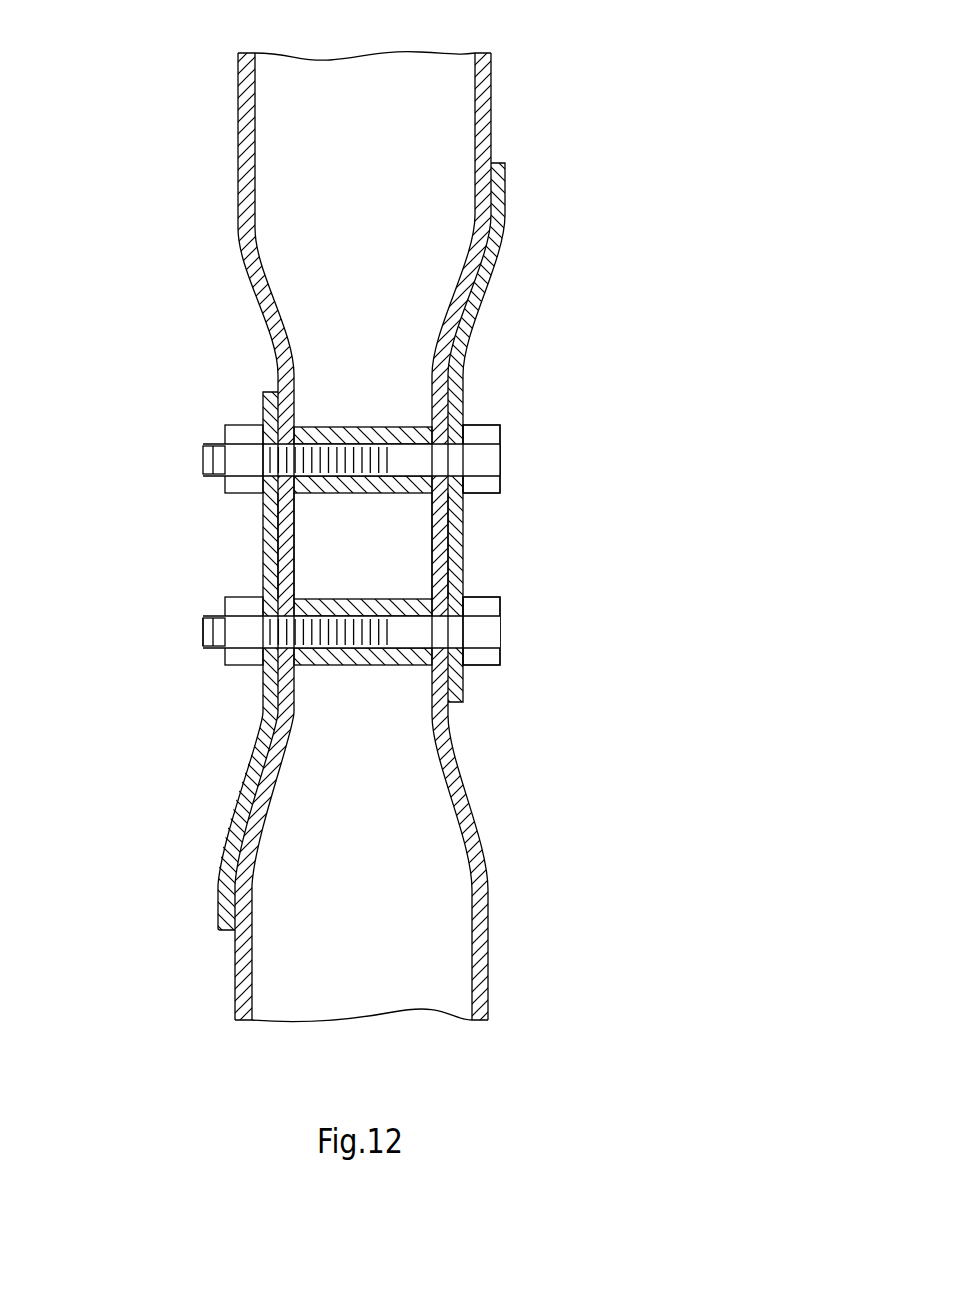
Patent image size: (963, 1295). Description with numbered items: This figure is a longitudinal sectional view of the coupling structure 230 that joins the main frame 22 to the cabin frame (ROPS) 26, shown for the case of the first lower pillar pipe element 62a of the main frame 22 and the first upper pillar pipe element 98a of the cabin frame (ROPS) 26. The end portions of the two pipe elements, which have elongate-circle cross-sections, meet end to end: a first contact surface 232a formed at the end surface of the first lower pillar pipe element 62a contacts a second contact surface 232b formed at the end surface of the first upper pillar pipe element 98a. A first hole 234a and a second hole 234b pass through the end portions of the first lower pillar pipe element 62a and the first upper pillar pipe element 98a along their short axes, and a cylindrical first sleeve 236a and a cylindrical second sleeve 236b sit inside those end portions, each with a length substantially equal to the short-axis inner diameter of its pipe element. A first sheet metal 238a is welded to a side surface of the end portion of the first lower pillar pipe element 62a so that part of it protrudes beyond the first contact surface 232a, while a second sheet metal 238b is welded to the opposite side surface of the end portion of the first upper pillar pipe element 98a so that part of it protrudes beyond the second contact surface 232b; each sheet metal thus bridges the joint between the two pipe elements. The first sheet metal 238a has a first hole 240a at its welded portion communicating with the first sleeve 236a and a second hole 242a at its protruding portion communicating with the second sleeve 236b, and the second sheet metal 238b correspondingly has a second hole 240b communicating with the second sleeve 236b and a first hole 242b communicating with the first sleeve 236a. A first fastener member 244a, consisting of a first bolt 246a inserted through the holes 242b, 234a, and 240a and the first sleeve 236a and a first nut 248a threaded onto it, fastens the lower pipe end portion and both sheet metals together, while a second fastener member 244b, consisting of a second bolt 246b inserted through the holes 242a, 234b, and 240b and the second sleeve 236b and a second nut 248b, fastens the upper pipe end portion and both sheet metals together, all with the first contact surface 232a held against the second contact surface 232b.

The coupling structure 230 is at (355, 535).
The cabin frame (ROPS) 26 is at (325, 298).
The first upper pillar pipe element 98a is at (240, 168).
The main frame 22 is at (314, 805).
The first lower pillar pipe element 62a is at (235, 965).
The first sheet metal 238a is at (227, 886).
The second sheet metal 238b is at (506, 218).
The first contact surface 232a is at (330, 545).
The second contact surface 232b is at (293, 547).
The first sleeve 236a is at (345, 668).
The second sleeve 236b is at (362, 427).
The first hole 234a is at (278, 627).
The second hole 234b is at (262, 466).
The first nut 248a is at (236, 652).
The second nut 248b is at (235, 437).
The first fastener member 244a is at (487, 669).
The second fastener member 244b is at (488, 424).
The first bolt 246a is at (490, 650).
The second bolt 246b is at (487, 440).
The first hole 240a is at (265, 620).
The second hole 240b is at (500, 470).
The second hole 242a is at (263, 469).
The first hole 242b is at (466, 624).